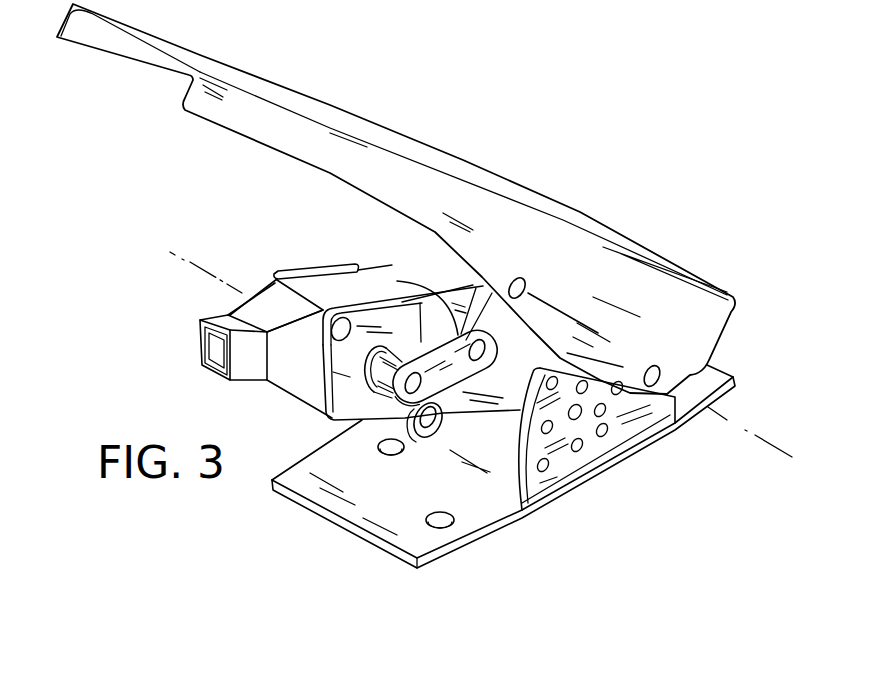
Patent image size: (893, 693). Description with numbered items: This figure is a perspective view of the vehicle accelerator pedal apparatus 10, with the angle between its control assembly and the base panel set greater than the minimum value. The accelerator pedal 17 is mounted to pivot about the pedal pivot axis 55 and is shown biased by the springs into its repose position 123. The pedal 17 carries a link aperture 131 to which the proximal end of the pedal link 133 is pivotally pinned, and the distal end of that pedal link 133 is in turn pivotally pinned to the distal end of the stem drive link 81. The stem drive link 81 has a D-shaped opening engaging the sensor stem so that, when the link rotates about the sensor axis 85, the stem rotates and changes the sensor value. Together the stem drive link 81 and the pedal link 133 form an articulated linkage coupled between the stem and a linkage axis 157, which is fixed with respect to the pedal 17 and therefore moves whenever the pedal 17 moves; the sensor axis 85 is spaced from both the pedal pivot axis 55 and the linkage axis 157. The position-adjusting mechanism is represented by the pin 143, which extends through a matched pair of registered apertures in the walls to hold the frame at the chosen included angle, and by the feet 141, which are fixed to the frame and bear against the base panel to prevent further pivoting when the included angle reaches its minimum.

The vehicle accelerator pedal apparatus 10 is at (150, 157).
The accelerator pedal 17 is at (462, 160).
The repose position 123 is at (379, 88).
The link aperture 131 is at (527, 283).
The linkage axis 157 is at (593, 333).
The pedal link 133 is at (455, 258).
The sensor axis 85 is at (150, 242).
The stem drive link 81 is at (453, 383).
The foot 141 is at (412, 445).
The pin 143 is at (577, 418).
The pedal pivot axis 55 is at (727, 420).